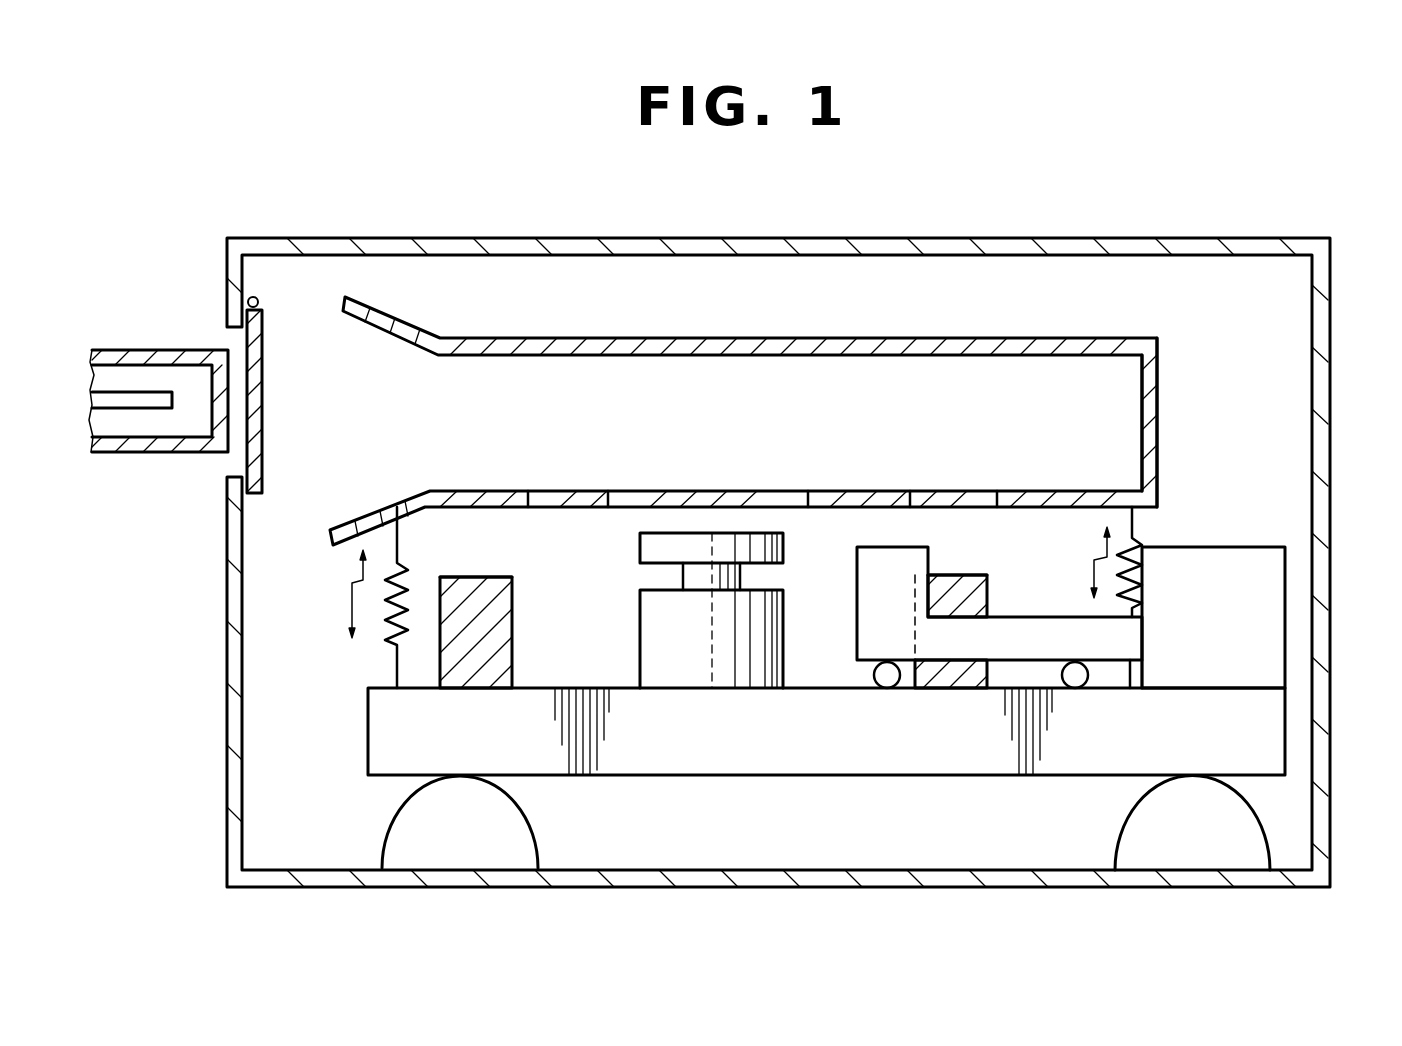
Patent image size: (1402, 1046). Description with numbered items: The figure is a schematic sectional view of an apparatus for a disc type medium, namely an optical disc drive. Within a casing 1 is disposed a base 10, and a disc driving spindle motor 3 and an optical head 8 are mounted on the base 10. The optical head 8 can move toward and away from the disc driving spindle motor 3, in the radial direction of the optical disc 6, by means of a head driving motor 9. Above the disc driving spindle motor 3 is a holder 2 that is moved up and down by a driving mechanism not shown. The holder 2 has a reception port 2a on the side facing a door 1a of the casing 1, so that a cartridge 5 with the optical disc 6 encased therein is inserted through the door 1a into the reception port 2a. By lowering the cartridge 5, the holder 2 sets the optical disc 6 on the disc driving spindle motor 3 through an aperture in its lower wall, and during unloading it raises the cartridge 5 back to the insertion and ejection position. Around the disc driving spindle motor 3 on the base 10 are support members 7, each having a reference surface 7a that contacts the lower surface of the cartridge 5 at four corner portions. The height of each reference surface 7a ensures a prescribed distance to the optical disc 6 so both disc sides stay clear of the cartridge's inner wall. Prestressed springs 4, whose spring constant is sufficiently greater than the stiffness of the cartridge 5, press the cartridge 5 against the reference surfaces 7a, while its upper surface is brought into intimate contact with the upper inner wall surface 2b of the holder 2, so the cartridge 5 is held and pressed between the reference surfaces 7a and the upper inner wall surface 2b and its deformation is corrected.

The casing 1 is at (1207, 231).
The door 1a is at (264, 355).
The holder 2 is at (674, 337).
The reception port 2a is at (399, 318).
The upper inner wall surface 2b is at (960, 337).
The disc driving spindle motor 3 is at (707, 533).
The prestressed springs 4 is at (390, 643).
The cartridge 5 is at (150, 350).
The optical disc 6 is at (153, 406).
The support members 7 is at (505, 605).
The reference surface 7a is at (465, 577).
The optical head 8 is at (1133, 640).
The head driving motor 9 is at (1275, 570).
The base 10 is at (1275, 725).